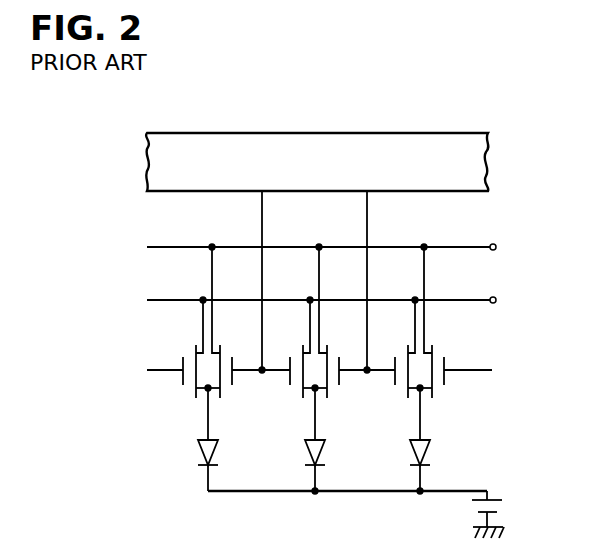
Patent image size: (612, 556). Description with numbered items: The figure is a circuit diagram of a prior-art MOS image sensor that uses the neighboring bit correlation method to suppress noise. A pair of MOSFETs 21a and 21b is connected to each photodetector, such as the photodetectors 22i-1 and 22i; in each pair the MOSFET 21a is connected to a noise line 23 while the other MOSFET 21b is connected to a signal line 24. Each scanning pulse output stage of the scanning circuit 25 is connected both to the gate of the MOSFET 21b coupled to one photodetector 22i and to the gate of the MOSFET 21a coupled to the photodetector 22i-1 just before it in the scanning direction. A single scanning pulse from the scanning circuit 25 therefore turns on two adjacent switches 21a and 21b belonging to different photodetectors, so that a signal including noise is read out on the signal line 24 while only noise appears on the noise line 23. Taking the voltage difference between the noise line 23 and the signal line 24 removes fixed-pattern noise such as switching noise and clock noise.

The scanning circuit 25 is at (345, 133).
The noise line 23 is at (483, 246).
The signal line 24 is at (488, 300).
The MOSFET 21a is at (237, 386).
The MOSFET 21b is at (183, 388).
The photodetector 22i-1 is at (192, 456).
The photodetector 22i is at (301, 457).